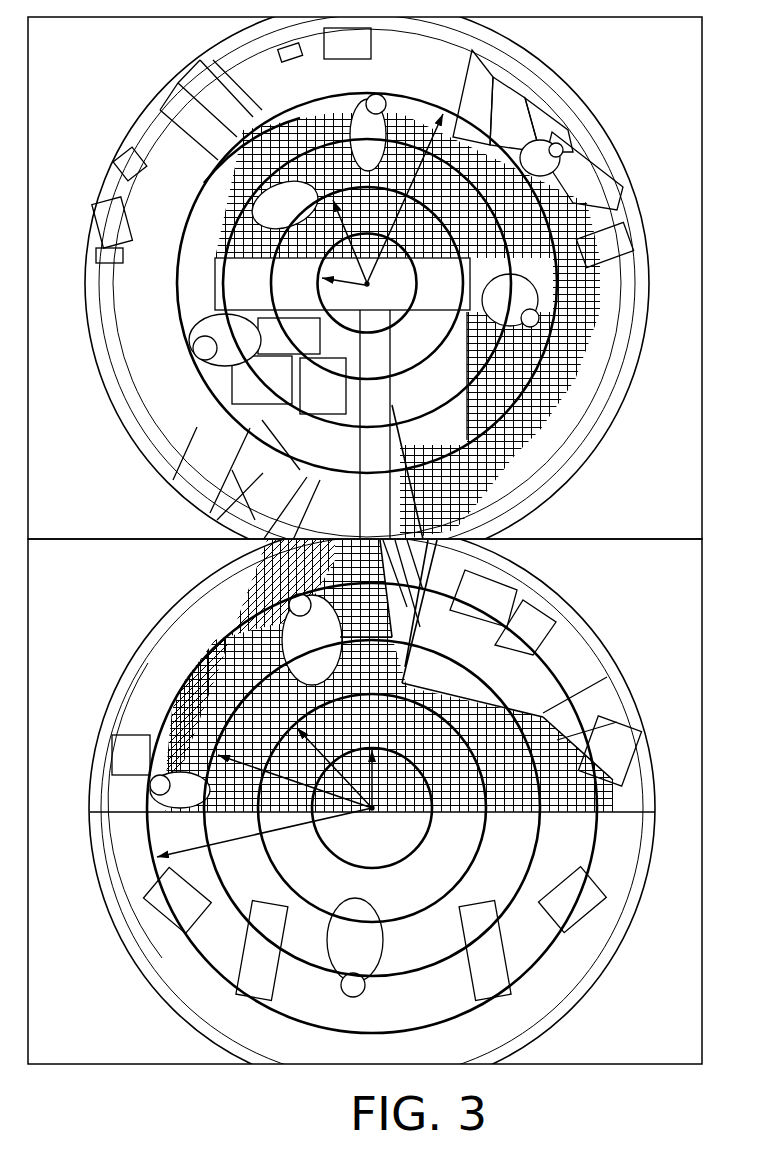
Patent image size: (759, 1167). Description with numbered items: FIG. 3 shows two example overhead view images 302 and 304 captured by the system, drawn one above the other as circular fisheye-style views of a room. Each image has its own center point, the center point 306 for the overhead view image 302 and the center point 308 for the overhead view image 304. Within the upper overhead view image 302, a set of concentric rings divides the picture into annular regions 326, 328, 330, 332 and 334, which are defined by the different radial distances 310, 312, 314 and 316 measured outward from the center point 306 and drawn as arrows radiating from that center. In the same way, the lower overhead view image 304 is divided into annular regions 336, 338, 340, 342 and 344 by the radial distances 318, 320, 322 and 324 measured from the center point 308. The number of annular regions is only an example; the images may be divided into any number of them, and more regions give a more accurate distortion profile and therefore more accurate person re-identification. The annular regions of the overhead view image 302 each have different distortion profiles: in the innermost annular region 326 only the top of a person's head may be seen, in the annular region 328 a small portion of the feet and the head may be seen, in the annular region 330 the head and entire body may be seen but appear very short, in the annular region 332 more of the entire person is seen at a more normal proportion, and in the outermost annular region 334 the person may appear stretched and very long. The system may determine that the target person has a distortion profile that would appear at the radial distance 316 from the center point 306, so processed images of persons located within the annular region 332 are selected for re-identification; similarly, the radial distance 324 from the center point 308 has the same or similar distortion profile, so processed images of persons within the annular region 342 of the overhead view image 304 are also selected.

The overhead view image 302 is at (703, 278).
The overhead view image 304 is at (703, 810).
The center point 306 is at (366, 286).
The center point 308 is at (374, 812).
The radial distance 310 is at (323, 281).
The radial distance 312 is at (247, 237).
The radial distance 314 is at (271, 117).
The radial distance 316 is at (416, 125).
The radial distance 318 is at (374, 780).
The radial distance 320 is at (318, 750).
The radial distance 322 is at (218, 755).
The radial distance 324 is at (157, 857).
The annular region 326 is at (367, 283).
The annular region 328 is at (367, 283).
The annular region 330 is at (367, 283).
The annular region 332 is at (367, 283).
The annular region 334 is at (367, 283).
The annular region 336 is at (372, 808).
The annular region 338 is at (372, 808).
The annular region 340 is at (372, 808).
The annular region 342 is at (372, 808).
The annular region 344 is at (372, 808).